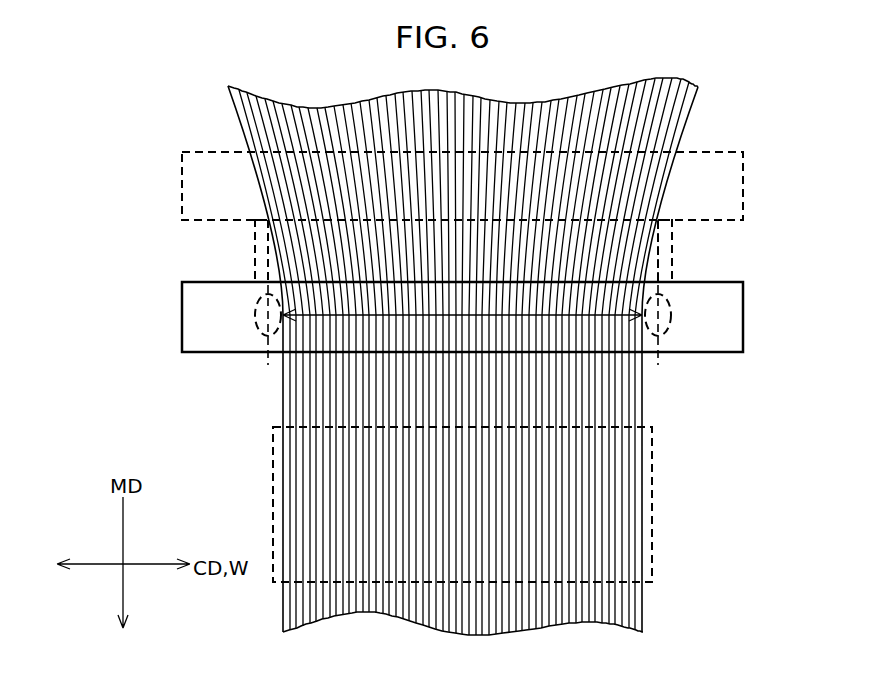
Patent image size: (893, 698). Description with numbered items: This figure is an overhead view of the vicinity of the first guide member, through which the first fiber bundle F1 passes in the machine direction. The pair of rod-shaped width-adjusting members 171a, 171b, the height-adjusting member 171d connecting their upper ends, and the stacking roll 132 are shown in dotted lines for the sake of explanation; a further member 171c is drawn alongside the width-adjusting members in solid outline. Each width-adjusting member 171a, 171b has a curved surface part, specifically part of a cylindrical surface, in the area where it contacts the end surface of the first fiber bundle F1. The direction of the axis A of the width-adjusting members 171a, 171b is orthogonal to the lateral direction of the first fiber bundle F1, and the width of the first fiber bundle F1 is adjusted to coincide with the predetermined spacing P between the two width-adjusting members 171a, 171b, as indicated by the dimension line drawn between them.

The first fiber bundle F1 is at (348, 110).
The height-adjusting member 171d is at (196, 190).
The width-adjusting member 171b is at (262, 264).
The width-adjusting member 171a is at (660, 263).
The third sensor region 171c is at (718, 320).
The stacking roll 132 is at (653, 510).
The predetermined spacing P is at (380, 315).
The axis A is at (463, 307).